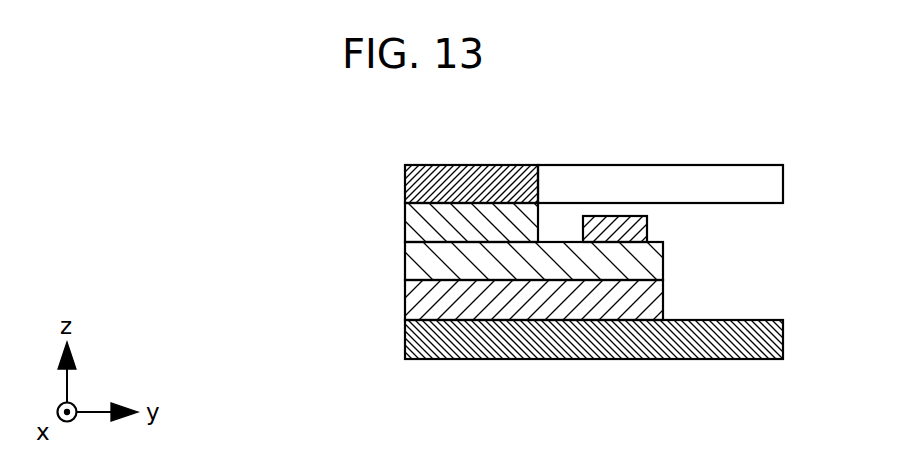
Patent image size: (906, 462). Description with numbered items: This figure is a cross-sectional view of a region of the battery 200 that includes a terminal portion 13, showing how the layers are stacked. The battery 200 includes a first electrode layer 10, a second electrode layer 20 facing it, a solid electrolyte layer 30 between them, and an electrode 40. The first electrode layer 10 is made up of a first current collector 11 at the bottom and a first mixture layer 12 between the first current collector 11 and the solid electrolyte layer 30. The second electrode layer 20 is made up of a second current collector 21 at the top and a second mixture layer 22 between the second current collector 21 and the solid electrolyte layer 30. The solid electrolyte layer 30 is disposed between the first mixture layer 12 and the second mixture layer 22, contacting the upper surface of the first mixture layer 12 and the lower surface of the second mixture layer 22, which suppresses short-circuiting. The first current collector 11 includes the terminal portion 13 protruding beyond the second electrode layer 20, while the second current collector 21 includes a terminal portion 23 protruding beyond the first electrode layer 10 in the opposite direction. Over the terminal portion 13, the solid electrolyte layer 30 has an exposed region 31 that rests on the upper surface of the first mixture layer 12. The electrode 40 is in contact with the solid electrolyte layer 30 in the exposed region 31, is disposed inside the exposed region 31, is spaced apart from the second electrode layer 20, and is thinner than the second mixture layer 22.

The battery 200 is at (250, 180).
The second electrode layer 20 is at (313, 162).
The second current collector 21 is at (405, 183).
The second mixture layer 22 is at (405, 222).
The terminal portion 23 is at (783, 162).
The solid electrolyte layer 30 is at (405, 258).
The exposed region 31 is at (647, 238).
The electrode 40 is at (622, 238).
The first electrode layer 10 is at (313, 280).
The first mixture layer 12 is at (405, 300).
The first current collector 11 is at (405, 338).
The terminal portion 13 is at (783, 363).